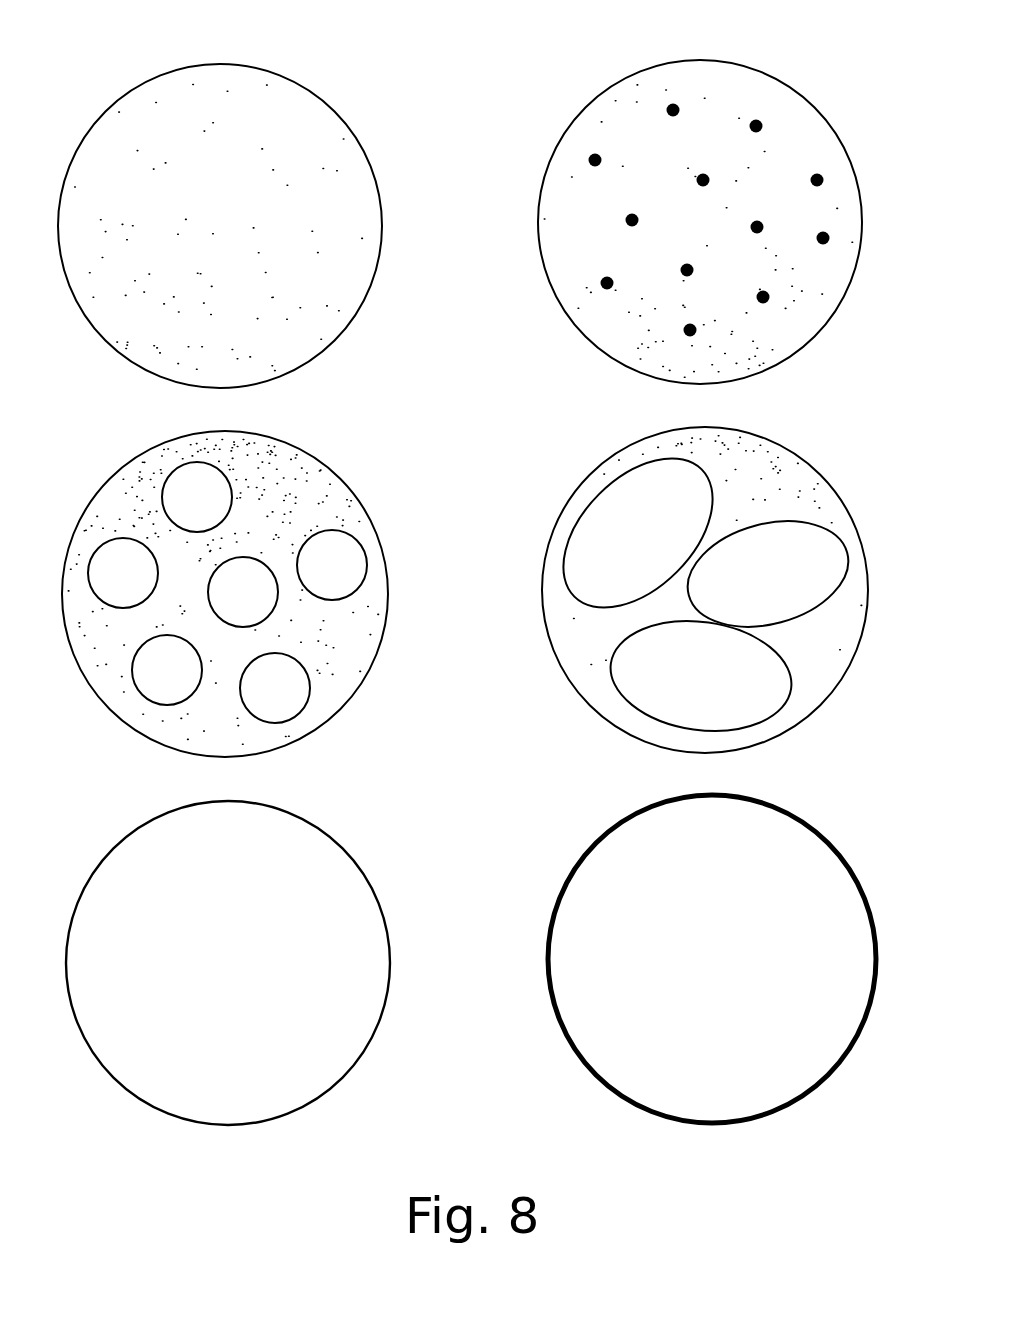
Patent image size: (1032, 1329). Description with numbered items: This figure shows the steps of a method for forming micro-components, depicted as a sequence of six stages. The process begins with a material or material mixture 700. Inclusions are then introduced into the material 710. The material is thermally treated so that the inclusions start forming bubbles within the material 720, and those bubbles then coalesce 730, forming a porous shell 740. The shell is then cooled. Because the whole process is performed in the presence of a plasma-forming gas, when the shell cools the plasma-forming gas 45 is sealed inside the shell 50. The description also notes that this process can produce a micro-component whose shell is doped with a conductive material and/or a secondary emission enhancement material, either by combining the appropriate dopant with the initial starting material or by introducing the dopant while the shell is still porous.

The material or material mixture 700 is at (205, 63).
The material with inclusions 710 is at (735, 66).
The material with forming bubbles 720 is at (323, 466).
The coalescing bubbles 730 is at (783, 447).
The porous shell 740 is at (313, 827).
The plasma-forming gas 45 is at (617, 1017).
The shell 50 is at (773, 1112).